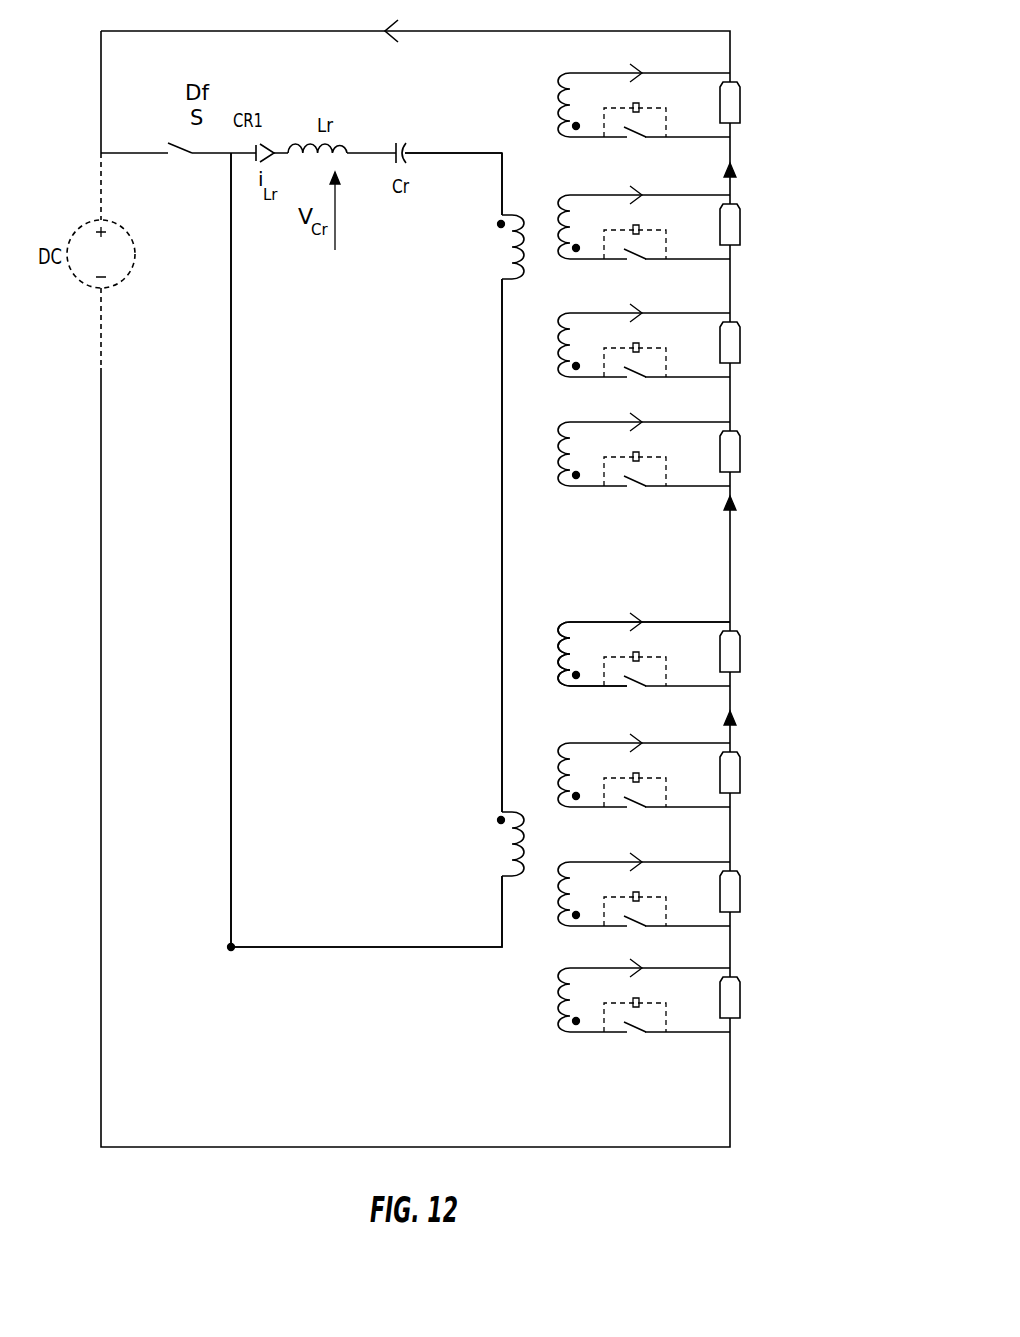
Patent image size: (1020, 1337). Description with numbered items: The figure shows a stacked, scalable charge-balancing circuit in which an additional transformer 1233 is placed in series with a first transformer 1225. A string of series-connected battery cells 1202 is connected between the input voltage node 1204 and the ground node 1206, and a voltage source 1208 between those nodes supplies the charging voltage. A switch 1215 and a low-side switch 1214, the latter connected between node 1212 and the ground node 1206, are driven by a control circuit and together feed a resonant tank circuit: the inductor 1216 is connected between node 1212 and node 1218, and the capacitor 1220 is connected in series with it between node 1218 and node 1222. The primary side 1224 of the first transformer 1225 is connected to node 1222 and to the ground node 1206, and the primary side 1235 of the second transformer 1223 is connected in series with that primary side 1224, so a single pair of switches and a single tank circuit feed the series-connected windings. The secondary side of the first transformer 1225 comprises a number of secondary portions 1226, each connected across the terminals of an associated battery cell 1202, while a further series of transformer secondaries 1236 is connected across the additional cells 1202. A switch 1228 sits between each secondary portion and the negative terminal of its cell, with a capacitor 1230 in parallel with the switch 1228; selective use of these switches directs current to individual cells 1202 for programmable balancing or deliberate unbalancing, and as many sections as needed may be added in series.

The battery cell 1202 is at (742, 104).
The input voltage node 1204 is at (100, 152).
The ground node 1206 is at (100, 365).
The voltage source 1208 is at (70, 240).
The node 1212 is at (236, 152).
The low-side switch 1214 is at (237, 306).
The switch 1215 is at (176, 157).
The inductor 1216 is at (345, 145).
The node 1218 is at (380, 150).
The capacitor 1220 is at (406, 161).
The node 1222 is at (440, 152).
The second transformer 1223 is at (445, 993).
The primary side 1224 is at (478, 262).
The first transformer 1225 is at (524, 196).
The secondary portion 1226 is at (585, 71).
The switch 1228 is at (633, 142).
The capacitor 1230 is at (638, 103).
The additional transformer 1233 is at (613, 620).
The primary side 1235 is at (498, 820).
The transformer secondary 1236 is at (550, 652).